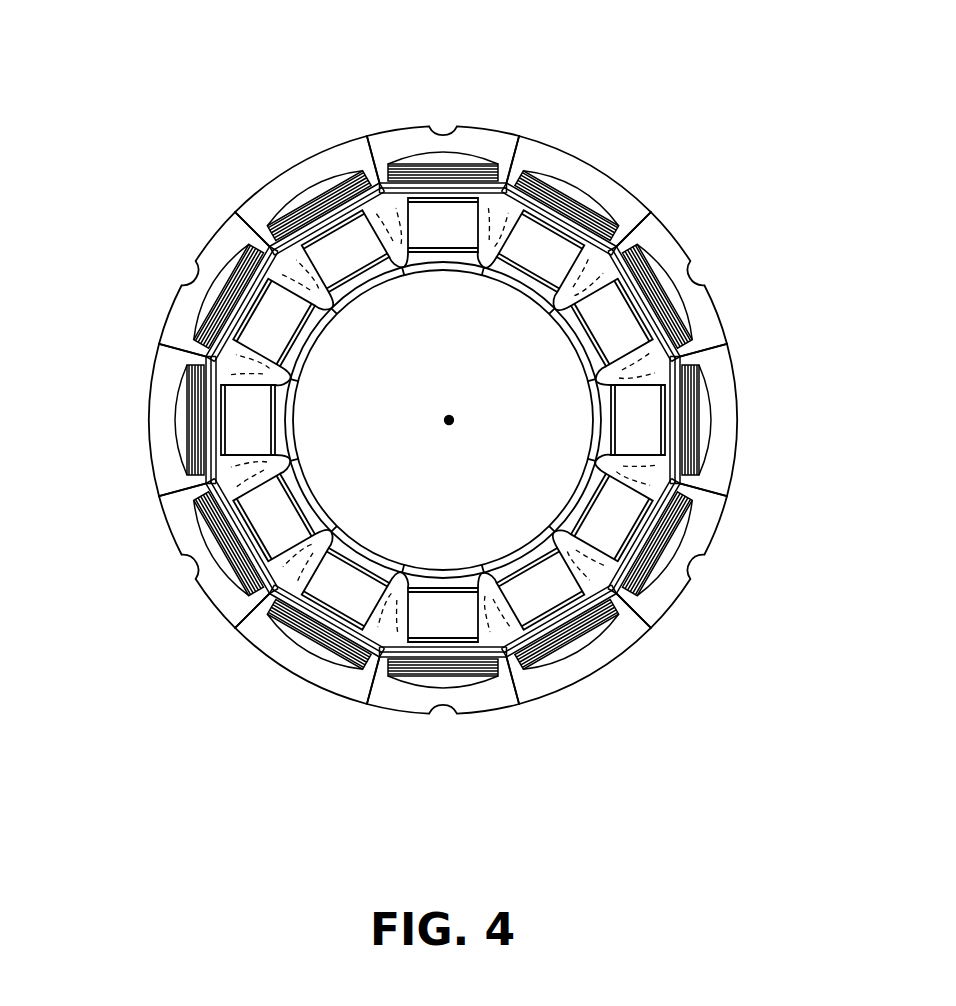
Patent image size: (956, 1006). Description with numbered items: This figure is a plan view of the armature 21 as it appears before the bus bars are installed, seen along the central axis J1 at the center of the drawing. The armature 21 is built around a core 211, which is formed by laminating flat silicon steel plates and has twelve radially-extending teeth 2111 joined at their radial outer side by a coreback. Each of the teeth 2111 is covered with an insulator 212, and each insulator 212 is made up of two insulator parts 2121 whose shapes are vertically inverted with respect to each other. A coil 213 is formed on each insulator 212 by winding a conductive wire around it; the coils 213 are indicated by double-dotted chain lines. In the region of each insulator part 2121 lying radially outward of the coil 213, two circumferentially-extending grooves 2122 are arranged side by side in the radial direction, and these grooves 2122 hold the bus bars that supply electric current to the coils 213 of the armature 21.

The armature 21 is at (173, 109).
The core 211 is at (165, 197).
The teeth 2111 is at (470, 218).
The insulators 212 is at (441, 60).
The insulator parts 2121 is at (408, 163).
The grooves 2122 is at (427, 180).
The coils 213 is at (337, 167).
The central axis J1 is at (456, 418).